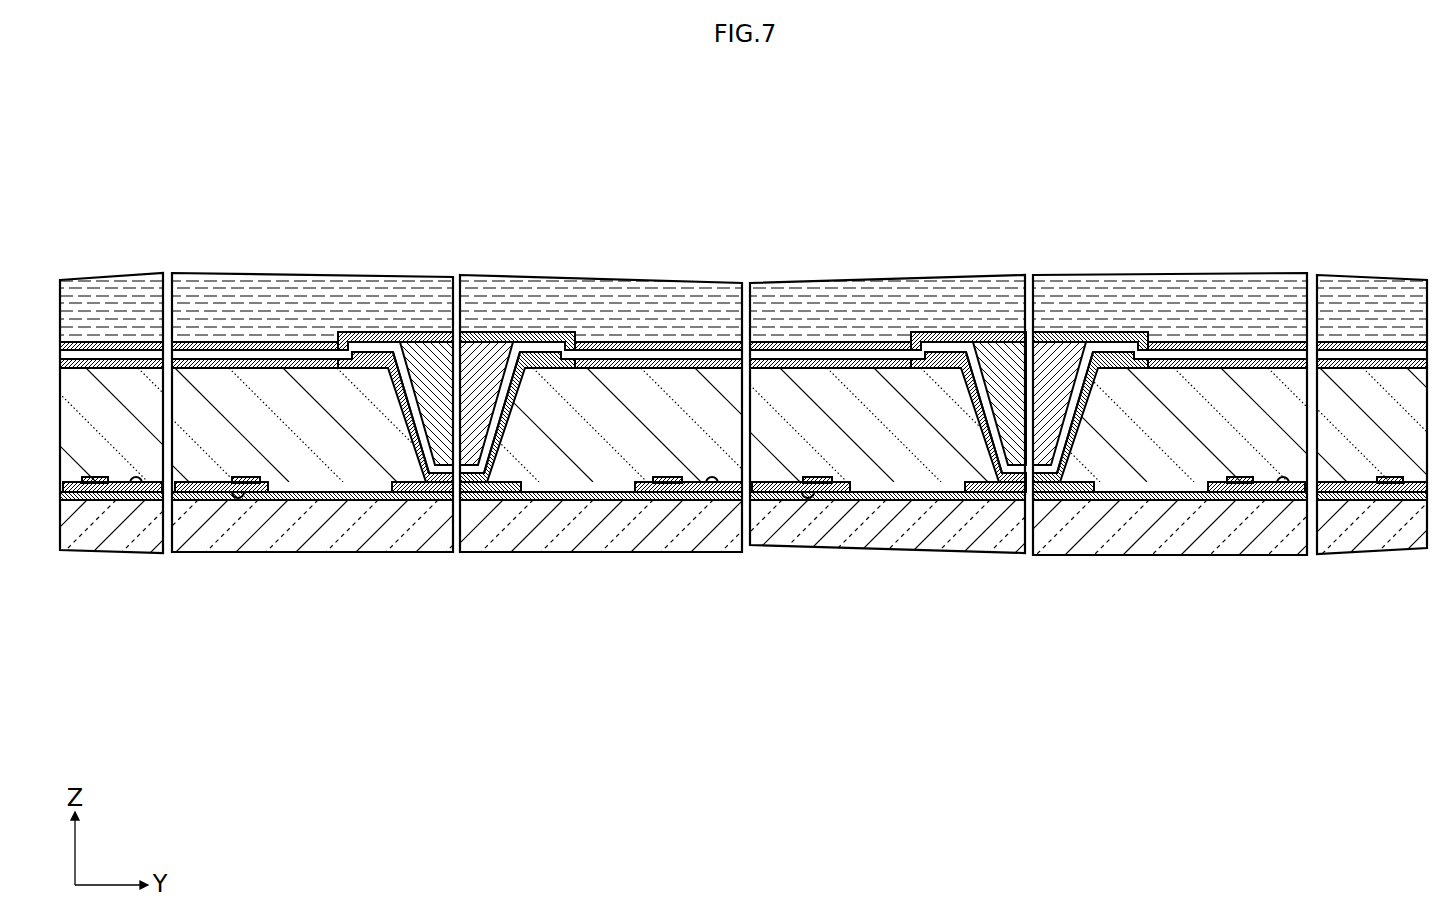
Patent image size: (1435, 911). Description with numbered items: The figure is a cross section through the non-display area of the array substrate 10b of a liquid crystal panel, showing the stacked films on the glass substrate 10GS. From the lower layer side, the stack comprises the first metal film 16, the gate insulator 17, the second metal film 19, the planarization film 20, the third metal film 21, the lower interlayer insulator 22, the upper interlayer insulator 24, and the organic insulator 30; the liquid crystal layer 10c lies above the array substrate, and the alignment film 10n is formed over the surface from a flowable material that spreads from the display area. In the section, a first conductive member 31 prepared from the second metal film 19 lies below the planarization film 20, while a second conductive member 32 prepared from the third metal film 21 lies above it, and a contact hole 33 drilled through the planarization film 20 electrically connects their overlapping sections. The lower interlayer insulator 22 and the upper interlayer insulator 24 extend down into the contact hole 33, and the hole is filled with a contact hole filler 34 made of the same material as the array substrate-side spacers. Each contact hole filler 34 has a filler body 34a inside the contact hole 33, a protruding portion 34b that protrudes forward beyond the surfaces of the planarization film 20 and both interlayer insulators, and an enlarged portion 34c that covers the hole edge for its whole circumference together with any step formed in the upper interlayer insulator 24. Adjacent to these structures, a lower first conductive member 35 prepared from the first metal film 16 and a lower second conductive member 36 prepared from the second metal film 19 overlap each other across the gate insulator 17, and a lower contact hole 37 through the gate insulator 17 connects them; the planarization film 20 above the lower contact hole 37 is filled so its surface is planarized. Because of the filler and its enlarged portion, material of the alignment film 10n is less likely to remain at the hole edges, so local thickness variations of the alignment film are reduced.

The alignment film 10n is at (217, 346).
The liquid crystal layer 10c is at (641, 325).
The array substrate 10b is at (719, 559).
The glass substrate 10GS is at (1152, 543).
The first metal film 16 is at (743, 573).
The gate insulator 17 is at (305, 498).
The second metal film 19 is at (742, 566).
The planarization film 20 is at (547, 455).
The third metal film 21 is at (745, 566).
The lower interlayer insulator 22 is at (878, 362).
The upper interlayer insulator 24 is at (743, 302).
The organic insulator 30 is at (771, 323).
The first conductive member 31 is at (494, 488).
The second conductive member 32 is at (440, 490).
The contact hole 33 is at (407, 438).
The contact hole filler 34 is at (746, 323).
The filler body 34a is at (472, 395).
The protruding portion 34b is at (442, 337).
The enlarged portion 34c is at (358, 333).
The lower first conductive member 35 is at (205, 490).
The lower second conductive member 36 is at (135, 490).
The lower contact hole 37 is at (229, 494).